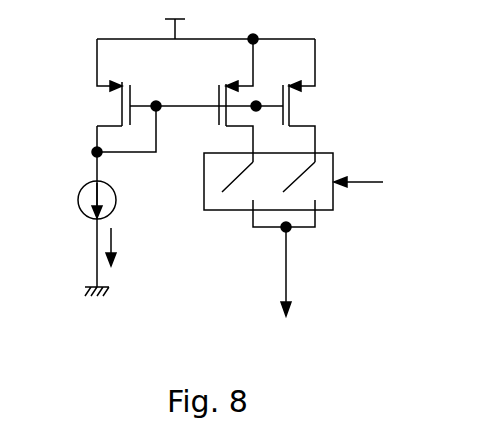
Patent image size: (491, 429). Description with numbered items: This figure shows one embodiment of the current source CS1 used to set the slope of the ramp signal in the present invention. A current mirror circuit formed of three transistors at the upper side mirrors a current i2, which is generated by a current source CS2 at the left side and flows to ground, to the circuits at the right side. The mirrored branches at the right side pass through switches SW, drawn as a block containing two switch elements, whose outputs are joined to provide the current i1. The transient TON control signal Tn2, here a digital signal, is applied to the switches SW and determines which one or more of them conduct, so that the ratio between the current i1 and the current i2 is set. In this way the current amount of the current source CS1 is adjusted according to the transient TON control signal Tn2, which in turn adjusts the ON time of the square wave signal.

The current source CS1 is at (138, 343).
The current source CS2 is at (68, 219).
The switches SW is at (328, 153).
The transient TON control signal Tn2 is at (399, 201).
The current i1 is at (289, 283).
The current i2 is at (125, 247).